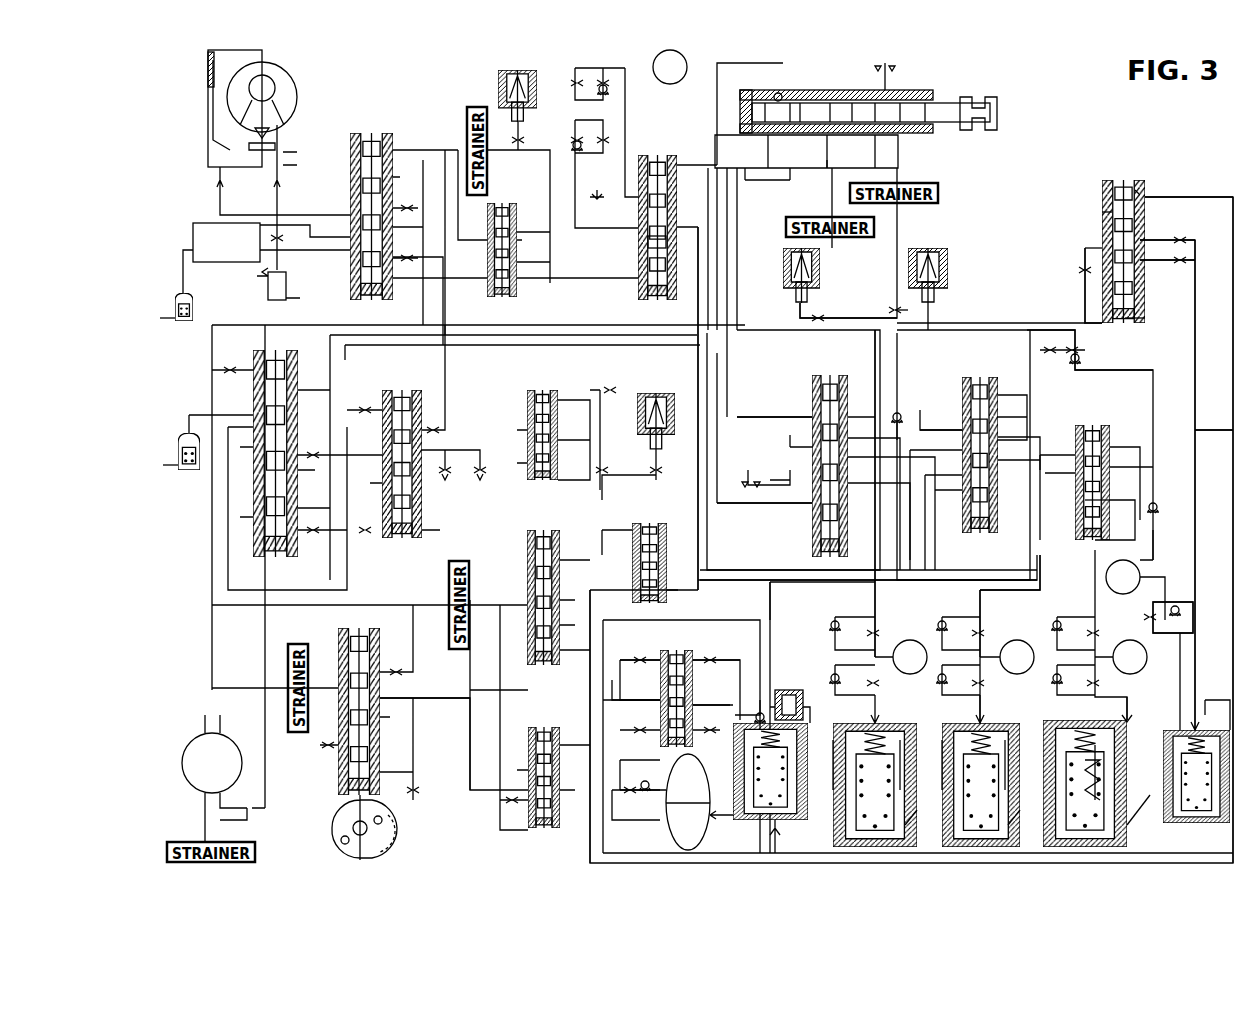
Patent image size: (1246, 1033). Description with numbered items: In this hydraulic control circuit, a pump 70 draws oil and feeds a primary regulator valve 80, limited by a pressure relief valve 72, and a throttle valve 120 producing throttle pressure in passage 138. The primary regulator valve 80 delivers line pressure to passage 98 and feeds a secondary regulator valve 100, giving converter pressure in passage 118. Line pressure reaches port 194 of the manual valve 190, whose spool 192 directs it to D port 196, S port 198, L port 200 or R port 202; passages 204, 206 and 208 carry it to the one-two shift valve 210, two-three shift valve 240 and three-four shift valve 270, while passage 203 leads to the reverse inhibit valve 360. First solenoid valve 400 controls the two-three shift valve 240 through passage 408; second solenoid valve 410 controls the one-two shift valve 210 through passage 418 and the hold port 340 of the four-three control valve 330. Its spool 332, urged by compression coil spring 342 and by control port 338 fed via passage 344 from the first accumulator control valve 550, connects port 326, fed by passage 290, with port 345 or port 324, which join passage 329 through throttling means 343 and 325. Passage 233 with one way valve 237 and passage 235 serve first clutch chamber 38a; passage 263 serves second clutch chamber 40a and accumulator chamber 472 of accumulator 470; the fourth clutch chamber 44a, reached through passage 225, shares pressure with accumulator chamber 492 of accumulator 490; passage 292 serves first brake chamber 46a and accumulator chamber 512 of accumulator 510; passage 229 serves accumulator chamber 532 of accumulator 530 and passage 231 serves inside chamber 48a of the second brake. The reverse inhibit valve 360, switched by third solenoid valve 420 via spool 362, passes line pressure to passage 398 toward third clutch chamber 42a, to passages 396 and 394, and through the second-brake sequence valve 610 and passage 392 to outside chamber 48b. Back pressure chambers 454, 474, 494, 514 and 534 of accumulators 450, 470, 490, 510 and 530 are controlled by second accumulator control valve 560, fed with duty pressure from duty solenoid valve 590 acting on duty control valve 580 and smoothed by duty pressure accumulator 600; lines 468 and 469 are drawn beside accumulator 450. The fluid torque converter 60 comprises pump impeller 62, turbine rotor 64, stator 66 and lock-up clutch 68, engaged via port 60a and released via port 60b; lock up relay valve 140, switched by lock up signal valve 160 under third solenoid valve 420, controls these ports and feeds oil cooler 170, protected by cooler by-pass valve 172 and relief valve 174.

The fluid torque converter 60 is at (287, 67).
The pump impeller 62 is at (292, 100).
The turbine rotor 64 is at (213, 107).
The stator 66 is at (275, 134).
The lock-up clutch 68 is at (208, 70).
The port 60a is at (277, 183).
The port 60b is at (220, 183).
The oil cooler 170 is at (196, 224).
The cooler by-pass valve 172 is at (288, 275).
The relief valve 174 is at (192, 300).
The lock up relay valve 140 is at (392, 304).
The third solenoid valve 420 is at (496, 82).
The lock up signal valve 160 is at (512, 303).
The passage 398 is at (560, 133).
The hydraulic pressure chamber of the third clutch 42a is at (690, 86).
The reverse inhibit valve 360 is at (630, 300).
The spool 362 is at (638, 243).
The manual valve 190 is at (925, 82).
The spool 192 is at (945, 128).
The port 194 is at (844, 153).
The D port 196 is at (804, 150).
The S port 198 is at (779, 90).
The L port 200 is at (735, 150).
The R port 202 is at (901, 150).
The passage 203 is at (790, 180).
The first solenoid valve 400 is at (782, 255).
The second solenoid valve 410 is at (928, 246).
The passage 408 is at (855, 321).
The 4-3 control valve 330 is at (1100, 190).
The spool 332 is at (1100, 215).
The port 326 is at (1100, 246).
The control port 338 is at (1140, 195).
The passage 344 is at (1207, 197).
The port 345 is at (1145, 236).
The throttling means 343 is at (1182, 237).
The port 324 is at (1145, 265).
The throttling means 325 is at (1188, 282).
The compression coil spring 342 is at (1135, 318).
The hold port 340 is at (1100, 313).
The passage 329 is at (1186, 322).
The passage 233 is at (970, 320).
The passage 98 is at (212, 355).
The pressure relief valve 72 is at (189, 420).
The primary regulator valve 80 is at (296, 556).
The secondary regulator valve 100 is at (402, 540).
The passage 118 is at (438, 428).
The duty control valve 580 is at (540, 388).
The duty solenoid valve 590 is at (653, 390).
The duty pressure accumulator 600 is at (640, 522).
The passage 396 is at (698, 497).
The passage 204 is at (730, 372).
The passage 208 is at (753, 417).
The passage 206 is at (738, 510).
The 2-3 shift valve 240 is at (810, 553).
The one way valve 237 is at (892, 410).
The passage 418 is at (920, 410).
The 1-2 shift valve 210 is at (998, 512).
The passage 290 is at (1150, 350).
The 3-4 shift valve 270 is at (1085, 545).
The passage 292 is at (1090, 507).
The passage 235 is at (1195, 445).
The hydraulic pressure chamber of the first clutch 38a is at (1143, 565).
The passage 394 is at (723, 580).
The passage 263 is at (875, 600).
The oil passage 225 is at (980, 600).
The passage 229 is at (770, 633).
The B2 sequence valve 610 is at (700, 673).
The passage 392 is at (612, 700).
The accumulator chamber 532 is at (753, 715).
The accumulator 530 is at (793, 690).
The passage 231 is at (745, 820).
The back pressure chamber 534 is at (775, 820).
The inside hydraulic pressure chamber of the second brake 48a is at (666, 830).
The outside hydraulic pressure chamber of the second brake 48b is at (666, 805).
The hydraulic pressure chamber of the second clutch 40a is at (906, 640).
The accumulator 470 is at (875, 722).
The accumulator chamber 472 is at (840, 728).
The back pressure chamber 474 is at (898, 770).
The fourth clutch C4 hydraulic servo 44a is at (1016, 640).
The accumulator 490 is at (985, 722).
The accumulator chamber 492 is at (955, 728).
The back pressure chamber 494 is at (1005, 755).
The hydraulic pressure chamber of the first brake 46a is at (1118, 640).
The B1 accumulator 510 is at (1075, 722).
The accumulator chamber 512 is at (1100, 748).
The back pressure chamber 514 is at (1105, 780).
The back pressure chamber 454 is at (1120, 735).
The check valve 469 is at (1187, 617).
The oil passage 468 is at (1180, 660).
The C1 accumulator 450 is at (1190, 826).
The pump 70 is at (220, 742).
The throttle valve 120 is at (330, 780).
The passage 138 is at (413, 698).
The second accumulator control valve 560 is at (520, 662).
The first accumulator control valve 550 is at (548, 835).